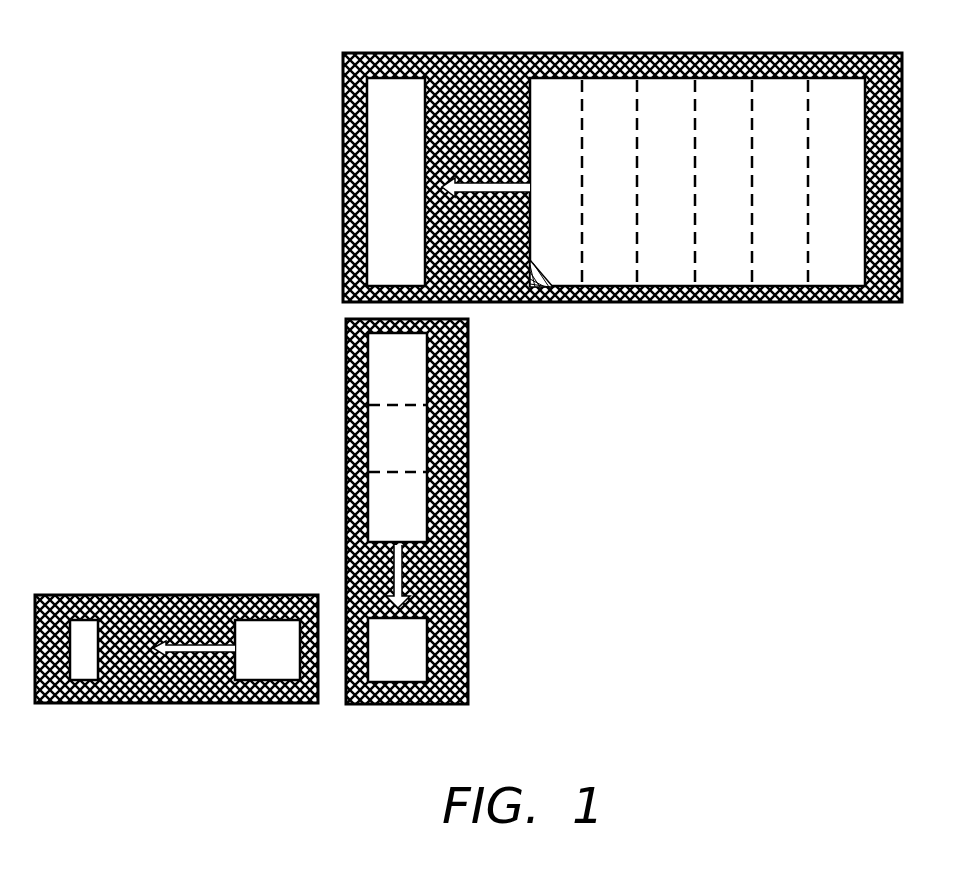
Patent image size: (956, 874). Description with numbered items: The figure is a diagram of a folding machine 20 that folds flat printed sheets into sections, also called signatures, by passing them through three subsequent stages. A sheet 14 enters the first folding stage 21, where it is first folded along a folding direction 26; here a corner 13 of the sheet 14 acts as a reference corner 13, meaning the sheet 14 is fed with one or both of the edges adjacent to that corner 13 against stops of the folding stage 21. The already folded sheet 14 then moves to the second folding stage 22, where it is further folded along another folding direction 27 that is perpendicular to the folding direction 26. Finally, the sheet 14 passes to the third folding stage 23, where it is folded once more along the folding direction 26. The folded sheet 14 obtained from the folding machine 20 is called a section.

The reference corner 13 is at (530, 303).
The sheet 14 is at (833, 117).
The folding machine 20 is at (805, 538).
The first folding stage 21 is at (536, 389).
The second folding stage 22 is at (456, 511).
The third folding stage 23 is at (268, 703).
The folding direction 26 is at (693, 258).
The folding direction 27 is at (400, 407).